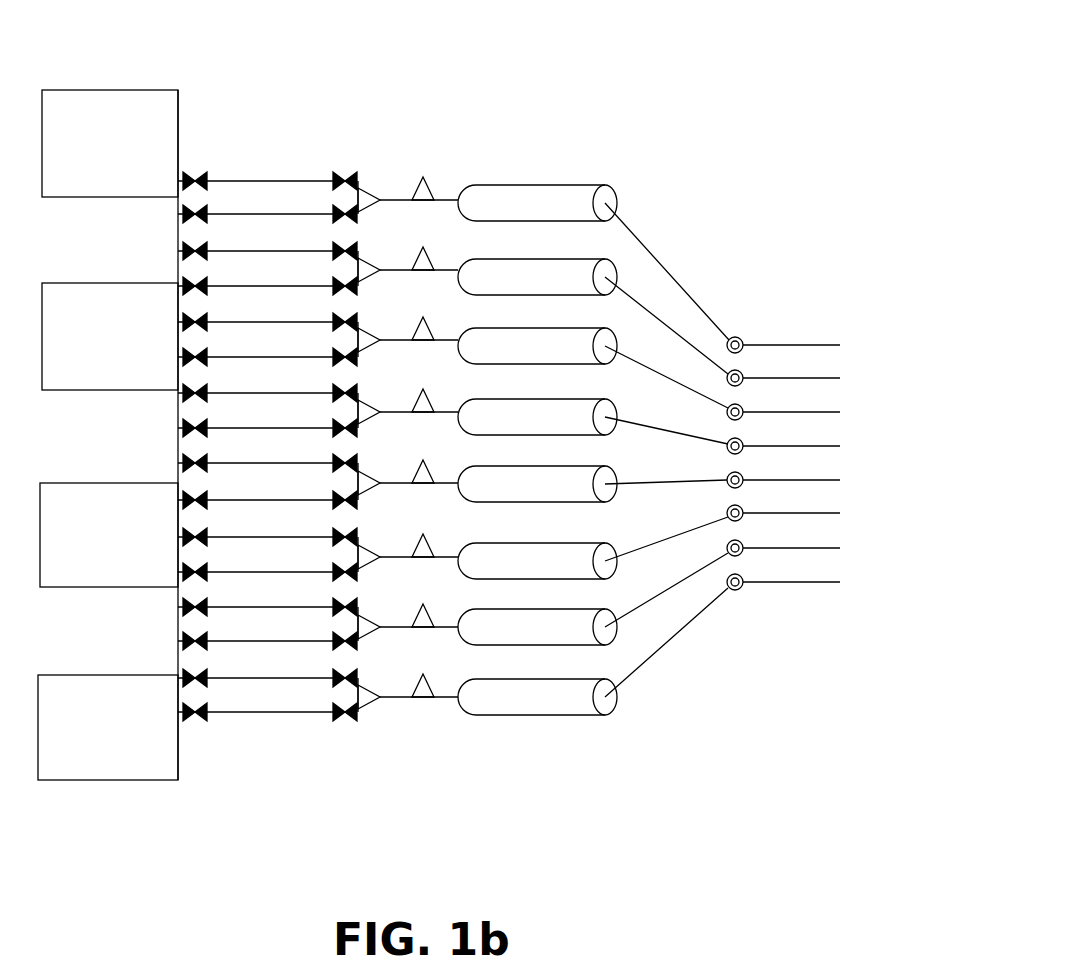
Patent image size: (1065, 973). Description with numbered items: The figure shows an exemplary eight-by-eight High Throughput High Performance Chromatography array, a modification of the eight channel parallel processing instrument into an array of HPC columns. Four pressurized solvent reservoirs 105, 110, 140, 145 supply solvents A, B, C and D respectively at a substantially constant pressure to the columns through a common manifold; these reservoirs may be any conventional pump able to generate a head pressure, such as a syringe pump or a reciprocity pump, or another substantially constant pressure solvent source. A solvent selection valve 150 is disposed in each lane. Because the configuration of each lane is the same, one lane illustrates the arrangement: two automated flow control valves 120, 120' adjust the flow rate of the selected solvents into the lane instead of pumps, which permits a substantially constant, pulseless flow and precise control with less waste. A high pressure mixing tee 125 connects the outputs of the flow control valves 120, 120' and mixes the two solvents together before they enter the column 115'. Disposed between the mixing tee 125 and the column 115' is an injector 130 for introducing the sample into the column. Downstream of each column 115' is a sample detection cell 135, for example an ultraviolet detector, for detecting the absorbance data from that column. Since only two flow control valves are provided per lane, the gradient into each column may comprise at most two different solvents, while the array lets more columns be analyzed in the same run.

The pressurized solvent reservoir 105 is at (80, 88).
The pressurized solvent reservoir 110 is at (82, 283).
The pressurized solvent reservoir 140 is at (75, 483).
The pressurized solvent reservoir 145 is at (65, 675).
The solvent selection valve 150 is at (191, 148).
The flow control valve 120 is at (312, 166).
The flow control valve 120' is at (310, 231).
The mixing tee 125 is at (366, 187).
The injector 130 is at (424, 176).
The column 115' is at (537, 180).
The sample detection cell 135 is at (737, 337).